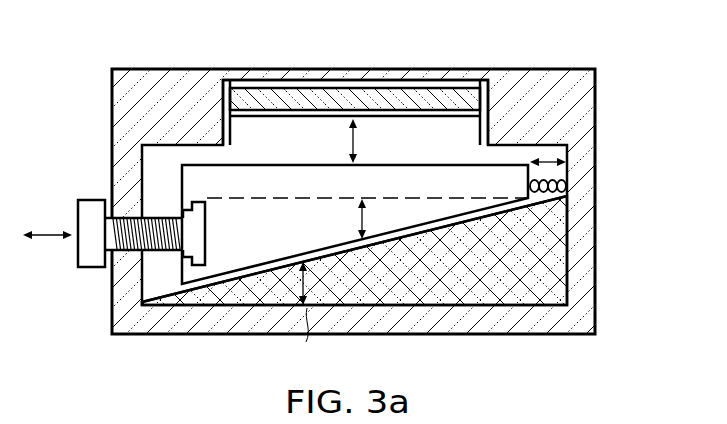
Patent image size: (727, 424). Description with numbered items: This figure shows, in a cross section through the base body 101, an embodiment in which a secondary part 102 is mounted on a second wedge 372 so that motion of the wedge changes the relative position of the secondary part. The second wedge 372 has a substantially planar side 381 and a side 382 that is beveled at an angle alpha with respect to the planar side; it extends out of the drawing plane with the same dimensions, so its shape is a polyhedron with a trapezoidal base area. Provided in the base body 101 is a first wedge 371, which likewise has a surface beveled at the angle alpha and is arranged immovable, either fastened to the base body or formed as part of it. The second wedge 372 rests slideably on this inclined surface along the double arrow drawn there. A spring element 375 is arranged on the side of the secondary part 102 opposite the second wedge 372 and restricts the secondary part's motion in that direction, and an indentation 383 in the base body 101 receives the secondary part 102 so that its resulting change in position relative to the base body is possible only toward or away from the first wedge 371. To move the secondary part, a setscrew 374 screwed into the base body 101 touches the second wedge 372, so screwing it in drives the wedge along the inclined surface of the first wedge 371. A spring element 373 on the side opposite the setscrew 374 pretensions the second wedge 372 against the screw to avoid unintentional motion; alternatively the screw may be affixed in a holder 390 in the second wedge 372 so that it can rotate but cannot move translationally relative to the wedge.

The base body 101 is at (597, 87).
The secondary part 102 is at (463, 135).
The first wedge 371 is at (553, 275).
The second wedge 372 is at (522, 163).
The spring element 373 is at (545, 196).
The setscrew 374 is at (79, 252).
The spring element 375 is at (268, 98).
The planar side 381 is at (202, 165).
The beveled side 382 is at (253, 308).
The indentation 383 is at (490, 82).
The holder 390 is at (187, 200).